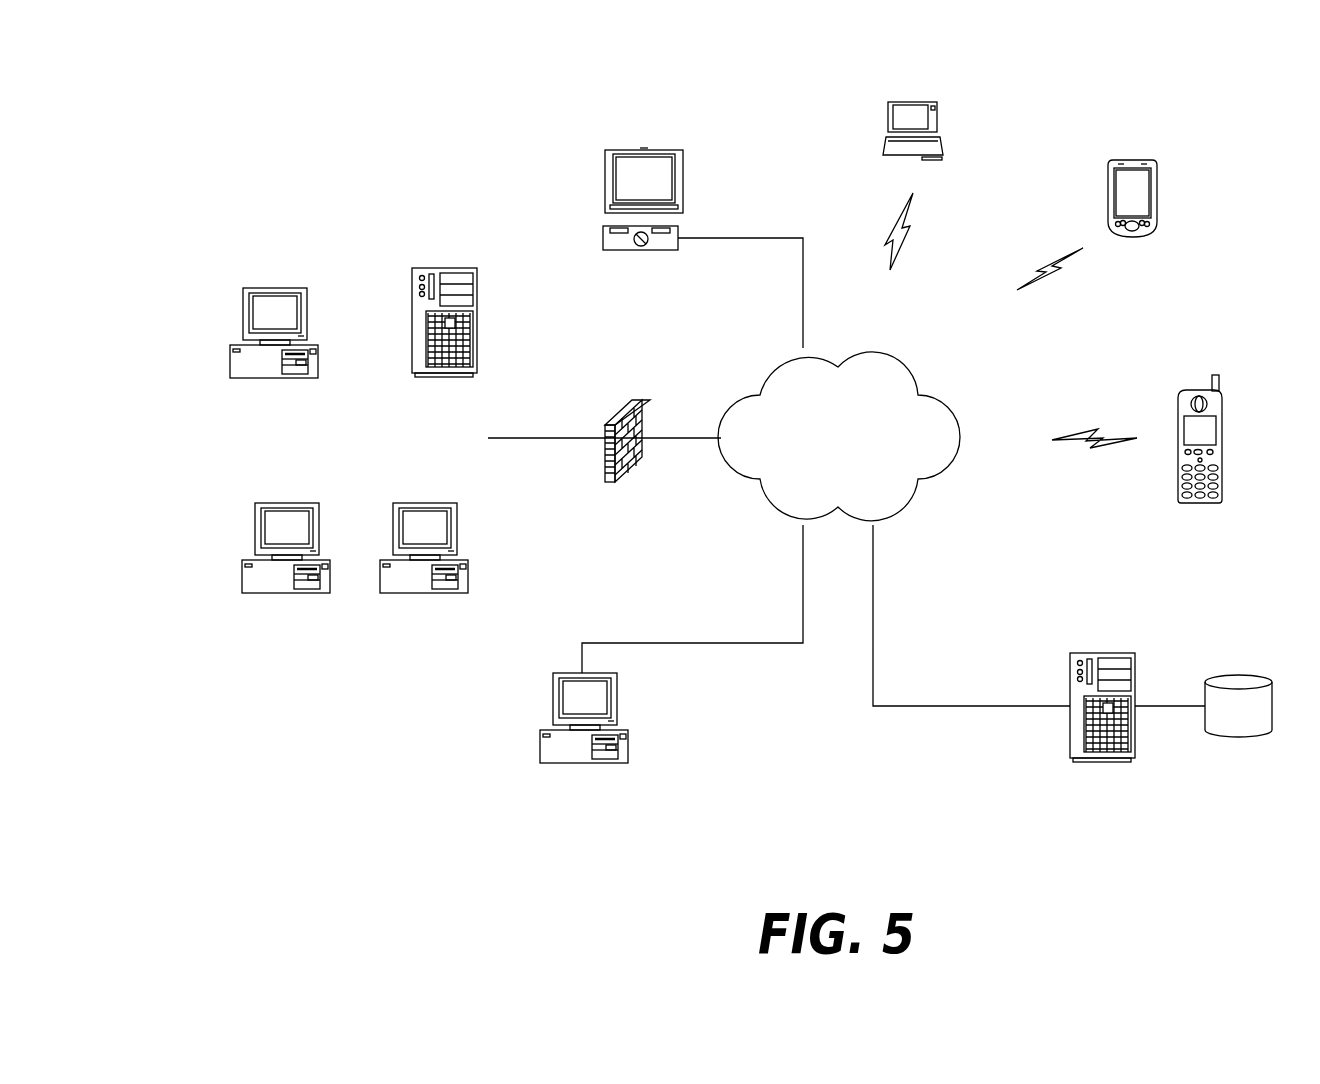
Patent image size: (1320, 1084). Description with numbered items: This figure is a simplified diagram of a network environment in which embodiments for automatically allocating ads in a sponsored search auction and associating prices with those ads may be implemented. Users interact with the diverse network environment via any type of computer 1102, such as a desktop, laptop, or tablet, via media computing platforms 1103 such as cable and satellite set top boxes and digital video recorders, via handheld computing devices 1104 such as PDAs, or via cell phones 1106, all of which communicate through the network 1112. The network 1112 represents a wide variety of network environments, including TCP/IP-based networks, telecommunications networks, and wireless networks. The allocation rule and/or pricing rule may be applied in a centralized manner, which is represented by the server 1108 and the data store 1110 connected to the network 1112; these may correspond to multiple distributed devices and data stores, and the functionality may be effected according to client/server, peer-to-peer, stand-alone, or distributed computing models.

The computer 1102 is at (243, 322).
The media computing platform 1103 is at (604, 238).
The handheld computing device 1104 is at (1110, 160).
The cell phone 1106 is at (1180, 392).
The server 1108 is at (1072, 653).
The data store 1110 is at (1238, 675).
The network 1112 is at (768, 360).